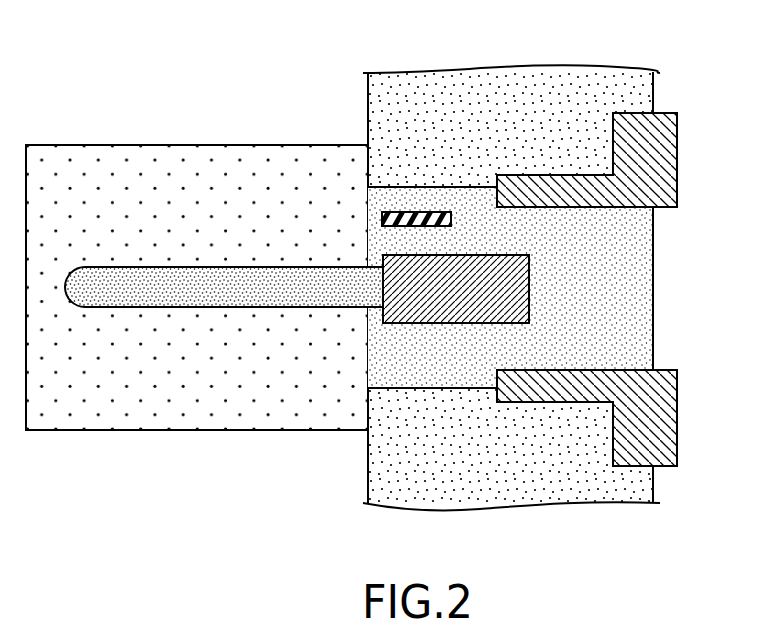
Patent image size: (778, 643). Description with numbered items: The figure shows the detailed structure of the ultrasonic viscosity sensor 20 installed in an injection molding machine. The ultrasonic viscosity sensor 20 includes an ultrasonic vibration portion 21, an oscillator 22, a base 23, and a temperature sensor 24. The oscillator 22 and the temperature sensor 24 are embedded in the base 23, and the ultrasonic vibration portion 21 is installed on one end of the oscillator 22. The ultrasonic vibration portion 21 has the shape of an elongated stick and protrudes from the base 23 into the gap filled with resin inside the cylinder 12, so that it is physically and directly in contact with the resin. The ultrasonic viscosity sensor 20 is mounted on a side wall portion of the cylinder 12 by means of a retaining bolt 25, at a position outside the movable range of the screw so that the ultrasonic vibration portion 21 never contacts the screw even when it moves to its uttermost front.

The cylinder 12 is at (513, 87).
The ultrasonic viscosity sensor 20 is at (407, 279).
The ultrasonic vibration portion 21 is at (231, 276).
The oscillator 22 is at (529, 291).
The base 23 is at (640, 336).
The temperature sensor 24 is at (451, 219).
The retaining bolt 25 is at (663, 172).